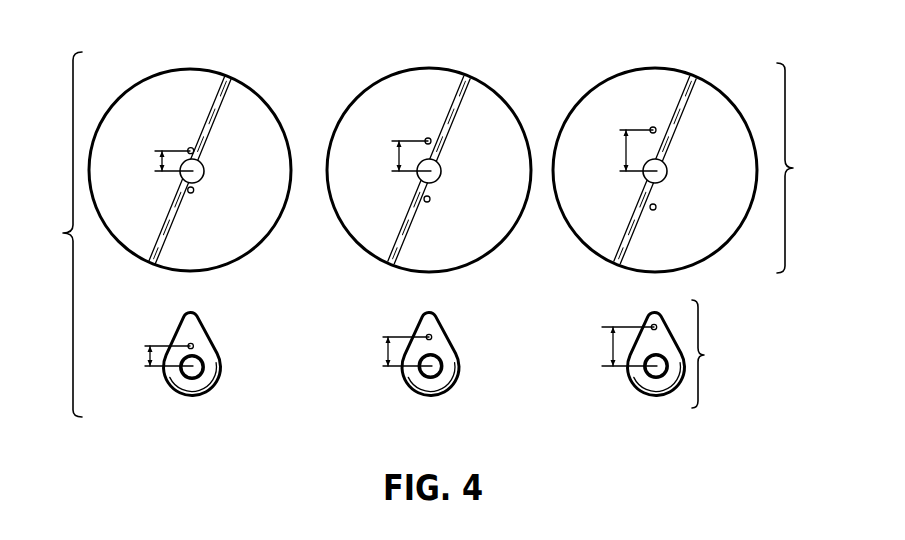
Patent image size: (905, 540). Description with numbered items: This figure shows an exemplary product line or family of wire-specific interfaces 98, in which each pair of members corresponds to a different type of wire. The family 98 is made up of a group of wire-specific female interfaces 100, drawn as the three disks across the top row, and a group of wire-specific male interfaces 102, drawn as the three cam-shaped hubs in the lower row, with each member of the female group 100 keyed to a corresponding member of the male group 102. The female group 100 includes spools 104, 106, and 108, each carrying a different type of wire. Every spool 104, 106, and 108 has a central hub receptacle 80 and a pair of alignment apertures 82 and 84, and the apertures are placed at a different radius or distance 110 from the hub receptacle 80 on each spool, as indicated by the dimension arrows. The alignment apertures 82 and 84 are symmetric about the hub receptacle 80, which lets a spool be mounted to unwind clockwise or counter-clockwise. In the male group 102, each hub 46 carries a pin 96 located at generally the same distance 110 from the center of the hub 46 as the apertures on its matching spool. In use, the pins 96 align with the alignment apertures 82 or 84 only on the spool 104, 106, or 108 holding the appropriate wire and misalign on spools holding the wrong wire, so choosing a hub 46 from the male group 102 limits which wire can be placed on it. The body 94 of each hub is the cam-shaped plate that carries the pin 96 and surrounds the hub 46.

The hub 46 is at (186, 379).
The hub receptacle 80 is at (204, 174).
The alignment aperture 82 is at (191, 147).
The alignment aperture 84 is at (191, 194).
The cam 94 is at (172, 381).
The pin 96 is at (189, 343).
The family of wire-specific interfaces 98 is at (63, 233).
The group of wire-specific female interfaces 100 is at (794, 168).
The group of wire-specific male interfaces 102 is at (704, 355).
The spool 104 is at (194, 58).
The spool 106 is at (433, 58).
The spool 108 is at (656, 56).
The distance 110 is at (160, 160).